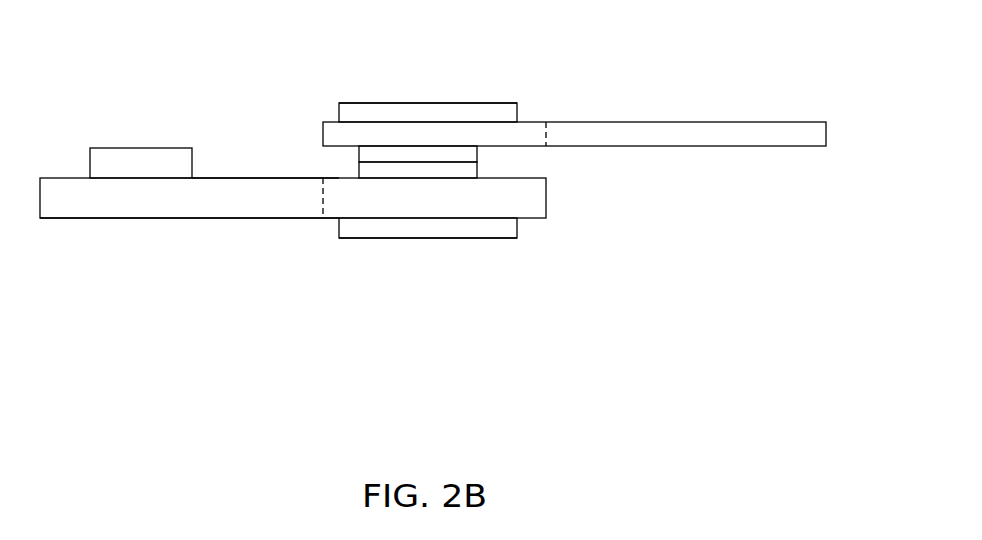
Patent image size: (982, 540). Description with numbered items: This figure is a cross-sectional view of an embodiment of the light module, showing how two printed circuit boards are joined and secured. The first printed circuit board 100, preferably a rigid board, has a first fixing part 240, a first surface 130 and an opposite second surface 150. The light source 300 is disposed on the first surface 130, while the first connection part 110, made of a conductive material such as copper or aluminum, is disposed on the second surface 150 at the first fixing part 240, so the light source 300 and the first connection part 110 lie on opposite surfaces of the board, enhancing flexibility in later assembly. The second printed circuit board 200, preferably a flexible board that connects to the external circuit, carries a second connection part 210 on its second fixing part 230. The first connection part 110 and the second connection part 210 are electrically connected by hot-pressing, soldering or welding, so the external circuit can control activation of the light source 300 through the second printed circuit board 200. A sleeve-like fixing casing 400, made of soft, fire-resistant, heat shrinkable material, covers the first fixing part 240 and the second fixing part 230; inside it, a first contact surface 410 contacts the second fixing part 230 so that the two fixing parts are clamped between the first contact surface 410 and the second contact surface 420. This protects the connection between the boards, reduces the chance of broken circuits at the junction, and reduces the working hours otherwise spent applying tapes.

The first printed circuit board 100 is at (142, 200).
The first connection part 110 is at (380, 170).
The first surface 130 is at (252, 178).
The second surface 150 is at (248, 218).
The second printed circuit board 200 is at (708, 132).
The second connection part 210 is at (443, 153).
The second fixing part 230 is at (505, 137).
The first fixing part 240 is at (352, 192).
The light source 300 is at (140, 162).
The fixing casing 400 is at (395, 113).
The first contact surface 410 is at (363, 122).
The second contact surface 420 is at (480, 220).